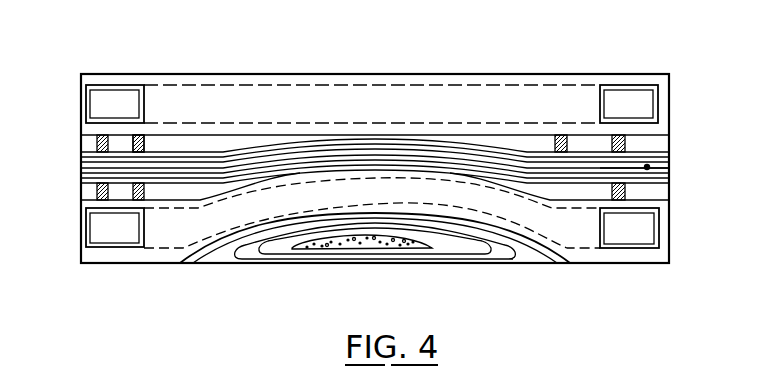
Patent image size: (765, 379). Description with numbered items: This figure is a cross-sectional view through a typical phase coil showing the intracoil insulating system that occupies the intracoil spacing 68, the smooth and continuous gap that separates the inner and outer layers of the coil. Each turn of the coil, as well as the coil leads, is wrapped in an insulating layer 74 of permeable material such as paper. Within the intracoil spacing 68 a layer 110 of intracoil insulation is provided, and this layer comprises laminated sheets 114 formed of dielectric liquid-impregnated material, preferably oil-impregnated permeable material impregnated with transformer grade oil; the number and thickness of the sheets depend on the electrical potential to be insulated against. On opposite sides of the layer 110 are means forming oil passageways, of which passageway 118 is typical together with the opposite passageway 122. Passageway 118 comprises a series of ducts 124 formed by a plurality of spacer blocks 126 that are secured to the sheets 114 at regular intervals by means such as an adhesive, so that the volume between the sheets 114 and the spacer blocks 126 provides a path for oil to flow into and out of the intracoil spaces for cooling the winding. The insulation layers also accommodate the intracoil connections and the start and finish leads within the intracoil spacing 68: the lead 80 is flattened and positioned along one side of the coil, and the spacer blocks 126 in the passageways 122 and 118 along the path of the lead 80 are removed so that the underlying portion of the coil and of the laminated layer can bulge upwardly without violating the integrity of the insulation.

The intracoil spacing 68 is at (75, 135).
The insulating layer 74 is at (138, 88).
The lead 80 is at (327, 242).
The layer of intracoil insulation 110 is at (673, 152).
The laminated sheets 114 is at (647, 167).
The oil passageway 118 is at (543, 142).
The oil passageway 122 is at (577, 190).
The duct 124 is at (600, 148).
The spacer block 126 is at (145, 145).